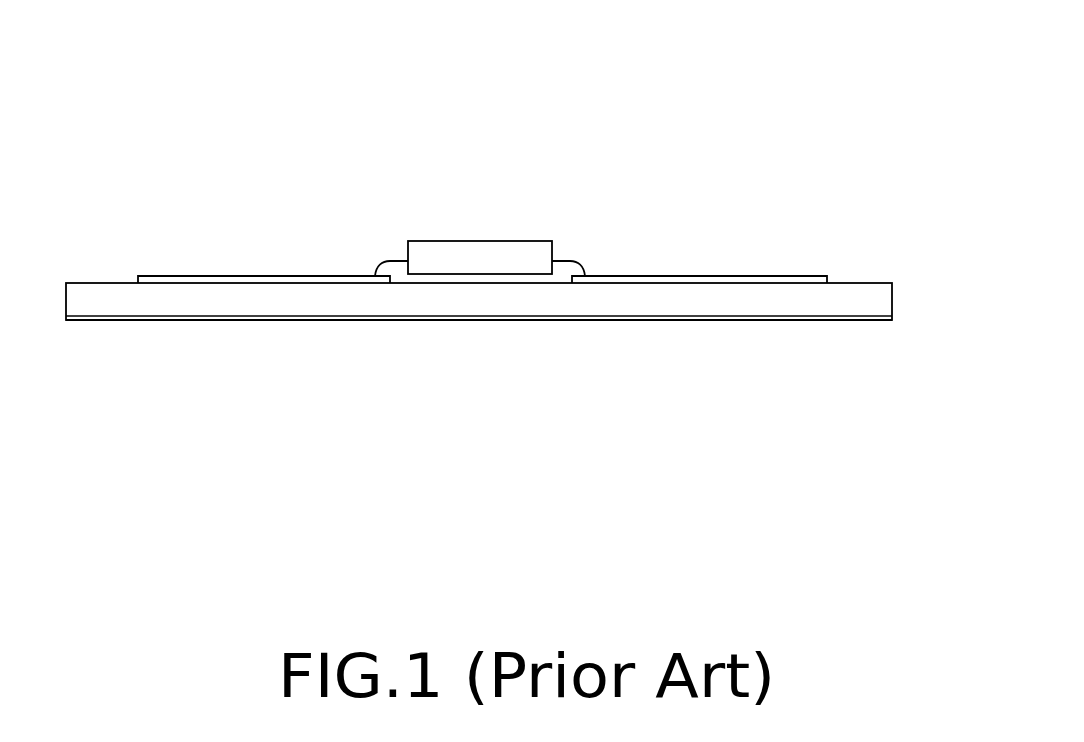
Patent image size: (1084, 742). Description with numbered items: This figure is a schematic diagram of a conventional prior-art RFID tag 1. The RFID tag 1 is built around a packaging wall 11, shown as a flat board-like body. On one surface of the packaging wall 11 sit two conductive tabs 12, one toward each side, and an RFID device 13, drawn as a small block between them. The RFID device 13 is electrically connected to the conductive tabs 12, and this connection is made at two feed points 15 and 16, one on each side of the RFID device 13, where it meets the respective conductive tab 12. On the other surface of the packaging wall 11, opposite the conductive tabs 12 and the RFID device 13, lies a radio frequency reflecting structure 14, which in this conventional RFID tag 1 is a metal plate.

The RFID tag 1 is at (843, 178).
The packaging wall 11 is at (470, 297).
The conductive tabs 12 is at (217, 275).
The RFID device 13 is at (478, 248).
The radio frequency reflecting structure 14 is at (353, 320).
The feed point 15 is at (385, 260).
The feed point 16 is at (577, 257).